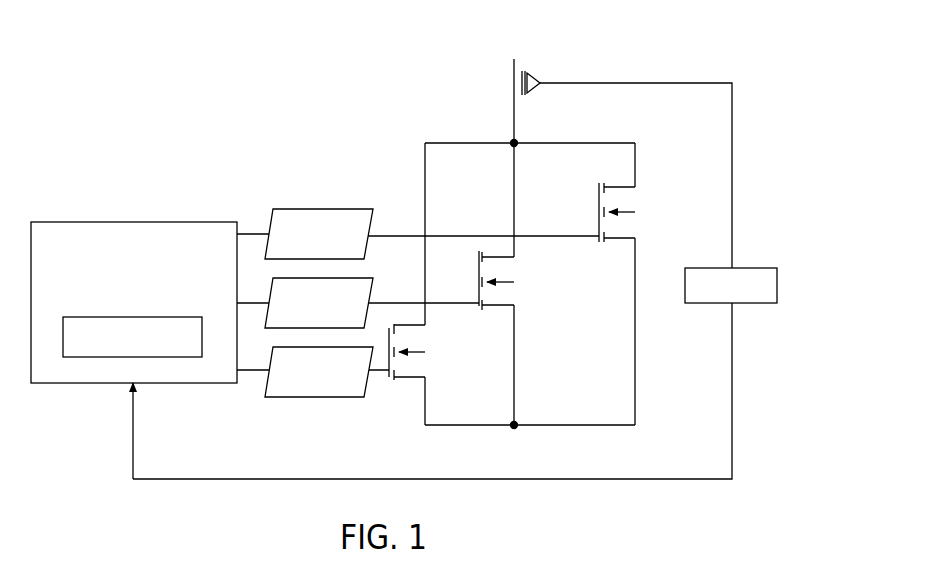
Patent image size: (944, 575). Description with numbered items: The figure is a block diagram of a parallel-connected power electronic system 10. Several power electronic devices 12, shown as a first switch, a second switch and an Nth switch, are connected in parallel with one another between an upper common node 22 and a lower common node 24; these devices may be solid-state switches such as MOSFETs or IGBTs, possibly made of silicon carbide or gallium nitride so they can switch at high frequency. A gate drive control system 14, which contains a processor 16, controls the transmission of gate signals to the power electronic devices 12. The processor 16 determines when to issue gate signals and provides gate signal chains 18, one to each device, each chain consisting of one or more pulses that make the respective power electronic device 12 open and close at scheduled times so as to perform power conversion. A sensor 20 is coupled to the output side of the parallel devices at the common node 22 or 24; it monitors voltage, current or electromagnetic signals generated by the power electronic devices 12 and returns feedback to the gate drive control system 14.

The parallel-connected power electronic system 10 is at (724, 48).
The power electronic devices 12 is at (434, 339).
The gate drive control system 14 is at (134, 221).
The processor 16 is at (170, 357).
The gate signal chains 18 is at (363, 206).
The sensor 20 is at (707, 305).
The common node 22 is at (518, 141).
The common node 24 is at (518, 428).